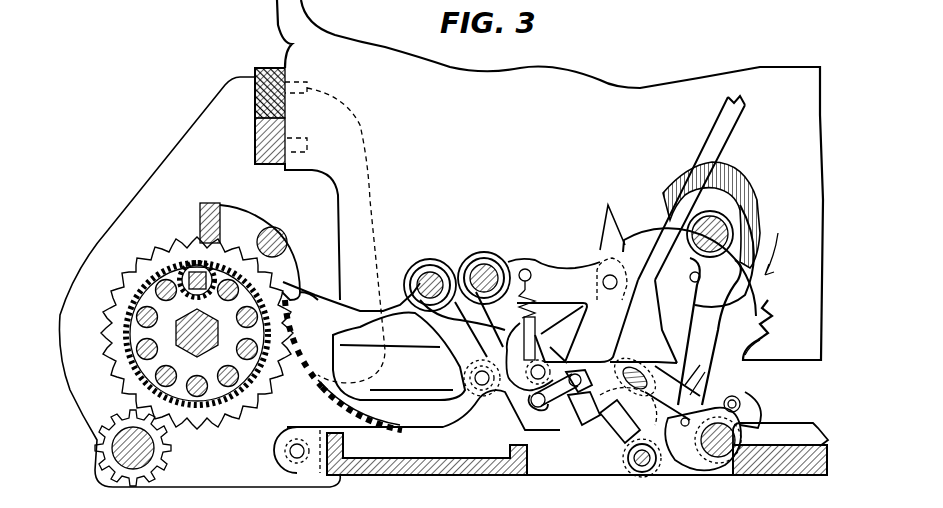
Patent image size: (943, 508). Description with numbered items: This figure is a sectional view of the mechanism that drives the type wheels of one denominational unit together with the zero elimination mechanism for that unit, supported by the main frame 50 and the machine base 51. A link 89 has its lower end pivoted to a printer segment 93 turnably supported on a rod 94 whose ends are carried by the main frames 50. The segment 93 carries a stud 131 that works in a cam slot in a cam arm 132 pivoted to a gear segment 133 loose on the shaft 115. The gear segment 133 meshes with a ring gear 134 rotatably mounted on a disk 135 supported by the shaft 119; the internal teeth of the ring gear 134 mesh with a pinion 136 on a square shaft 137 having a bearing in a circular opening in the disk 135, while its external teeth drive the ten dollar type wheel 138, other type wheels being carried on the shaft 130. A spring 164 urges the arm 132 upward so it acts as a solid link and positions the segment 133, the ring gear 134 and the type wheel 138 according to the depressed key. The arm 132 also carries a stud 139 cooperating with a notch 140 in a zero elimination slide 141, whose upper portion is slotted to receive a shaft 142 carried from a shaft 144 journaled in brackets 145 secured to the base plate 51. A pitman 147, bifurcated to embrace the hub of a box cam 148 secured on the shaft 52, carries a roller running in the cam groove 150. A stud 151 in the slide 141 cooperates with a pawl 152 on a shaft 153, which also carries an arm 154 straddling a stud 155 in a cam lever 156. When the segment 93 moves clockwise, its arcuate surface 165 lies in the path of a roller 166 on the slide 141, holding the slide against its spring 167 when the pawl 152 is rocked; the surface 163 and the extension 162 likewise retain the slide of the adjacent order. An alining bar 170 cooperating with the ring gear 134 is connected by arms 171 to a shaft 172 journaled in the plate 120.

The main frame 50 is at (620, 96).
The machine base 51 is at (435, 478).
The shaft 52 is at (703, 260).
The link 89 is at (703, 132).
The printer segment 93 is at (582, 270).
The rod 94 is at (484, 262).
The shaft 115 is at (428, 268).
The shaft 119 is at (207, 345).
The plate 120 is at (212, 112).
The shaft 130 is at (155, 449).
The stud 131 is at (515, 425).
The cam arm 132 is at (492, 392).
The gear segment 133 is at (418, 415).
The ring gear 134 is at (180, 333).
The disk 135 is at (140, 288).
The pinion 136 is at (178, 248).
The square shaft 137 is at (196, 262).
The type wheel 138 is at (160, 476).
The stud 139 is at (590, 368).
The notch 140 is at (583, 408).
The zero elimination slide 141 is at (655, 367).
The shaft 142 is at (606, 344).
The shaft 144 is at (722, 465).
The bracket 145 is at (800, 425).
The pitman 147 is at (703, 316).
The box cam 148 is at (752, 168).
The cam groove 150 is at (722, 160).
The stud 151 is at (705, 392).
The pawl 152 is at (620, 428).
The shaft 153 is at (634, 460).
The arm 154 is at (668, 468).
The stud 155 is at (757, 402).
The cam lever 156 is at (765, 337).
The extension 162 is at (595, 447).
The abrupt surface 163 is at (592, 428).
The spring 164 is at (532, 300).
The arcuate surface 165 is at (625, 325).
The roller 166 is at (625, 416).
The spring 167 is at (700, 380).
The alining bar 170 is at (212, 203).
The arm 171 is at (250, 212).
The shaft 172 is at (275, 230).